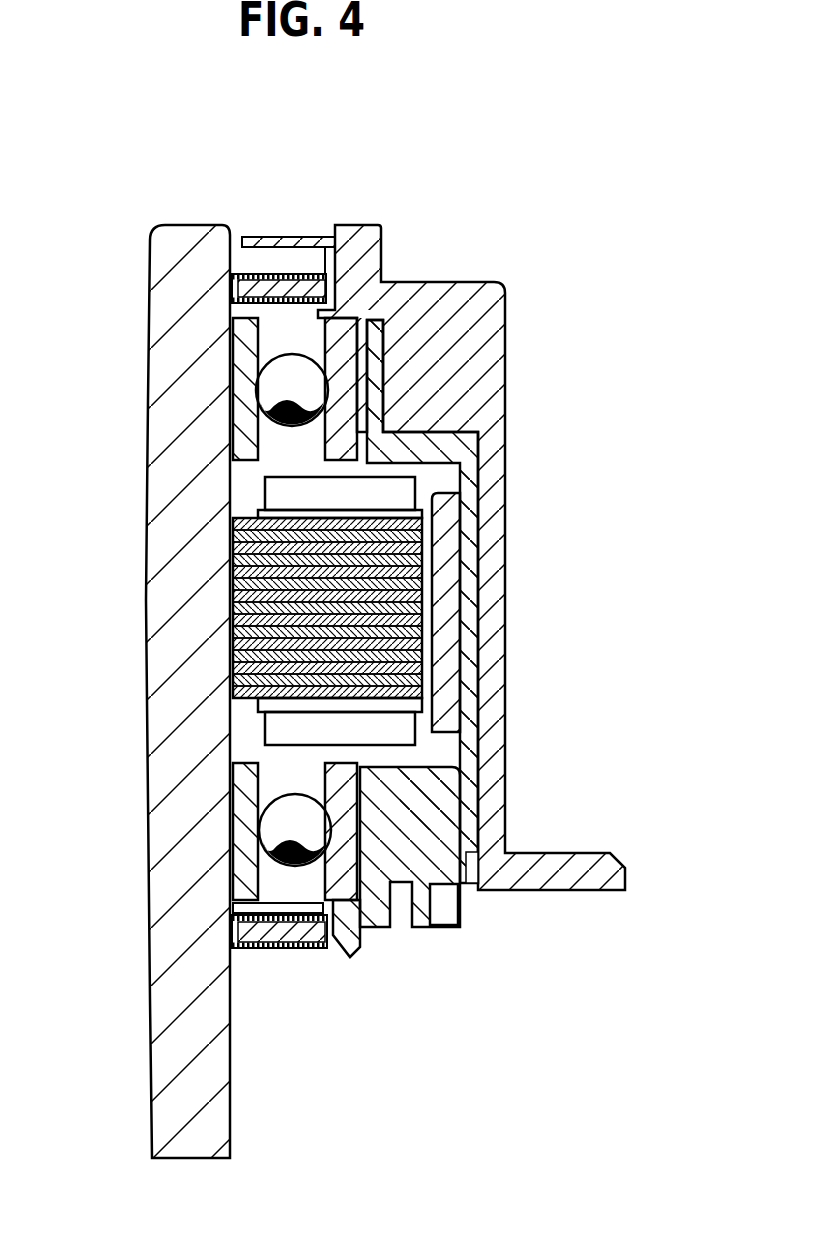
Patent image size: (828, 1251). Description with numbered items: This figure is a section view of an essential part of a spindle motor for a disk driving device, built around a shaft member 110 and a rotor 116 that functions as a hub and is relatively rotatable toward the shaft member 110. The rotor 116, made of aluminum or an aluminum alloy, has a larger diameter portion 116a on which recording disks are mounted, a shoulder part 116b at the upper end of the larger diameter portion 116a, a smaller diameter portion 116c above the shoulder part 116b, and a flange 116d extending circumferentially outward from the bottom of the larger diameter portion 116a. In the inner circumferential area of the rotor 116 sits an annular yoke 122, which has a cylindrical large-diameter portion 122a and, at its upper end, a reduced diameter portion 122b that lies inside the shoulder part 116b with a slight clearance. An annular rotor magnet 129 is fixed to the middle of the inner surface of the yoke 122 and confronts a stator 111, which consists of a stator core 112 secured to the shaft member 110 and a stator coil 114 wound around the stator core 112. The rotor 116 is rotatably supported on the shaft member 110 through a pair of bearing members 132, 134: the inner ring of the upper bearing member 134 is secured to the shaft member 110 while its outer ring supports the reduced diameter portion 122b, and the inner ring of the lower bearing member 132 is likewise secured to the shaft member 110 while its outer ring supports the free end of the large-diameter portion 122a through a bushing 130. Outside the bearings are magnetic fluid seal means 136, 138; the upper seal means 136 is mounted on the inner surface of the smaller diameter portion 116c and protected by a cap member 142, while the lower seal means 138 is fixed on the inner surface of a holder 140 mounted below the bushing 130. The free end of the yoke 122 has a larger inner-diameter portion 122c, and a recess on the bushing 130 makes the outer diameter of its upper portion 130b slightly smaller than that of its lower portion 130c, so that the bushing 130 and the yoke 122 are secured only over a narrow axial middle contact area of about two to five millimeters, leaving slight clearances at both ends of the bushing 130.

The shaft member 110 is at (165, 560).
The stator 111 is at (248, 492).
The stator core 112 is at (235, 663).
The stator coil 114 is at (265, 722).
The rotor 116 is at (519, 528).
The larger diameter portion 116a is at (493, 570).
The shoulder part 116b is at (492, 310).
The smaller diameter portion 116c is at (368, 232).
The flange 116d is at (612, 858).
The annular yoke 122 is at (501, 590).
The cylindrical large-diameter portion 122a is at (468, 620).
The reduced diameter portion 122b is at (373, 357).
The larger inner-diameter portion 122c is at (468, 884).
The annular rotor magnet 129 is at (447, 538).
The bushing 130 is at (486, 886).
The upper portion of the bushing 130b is at (443, 790).
The lower portion of the bushing 130c is at (452, 895).
The bearing member 132 is at (265, 835).
The bearing member 134 is at (270, 345).
The magnetic fluid seal means 136 is at (270, 262).
The magnetic fluid seal means 138 is at (300, 958).
The holder 140 is at (398, 927).
The cap member 142 is at (305, 238).